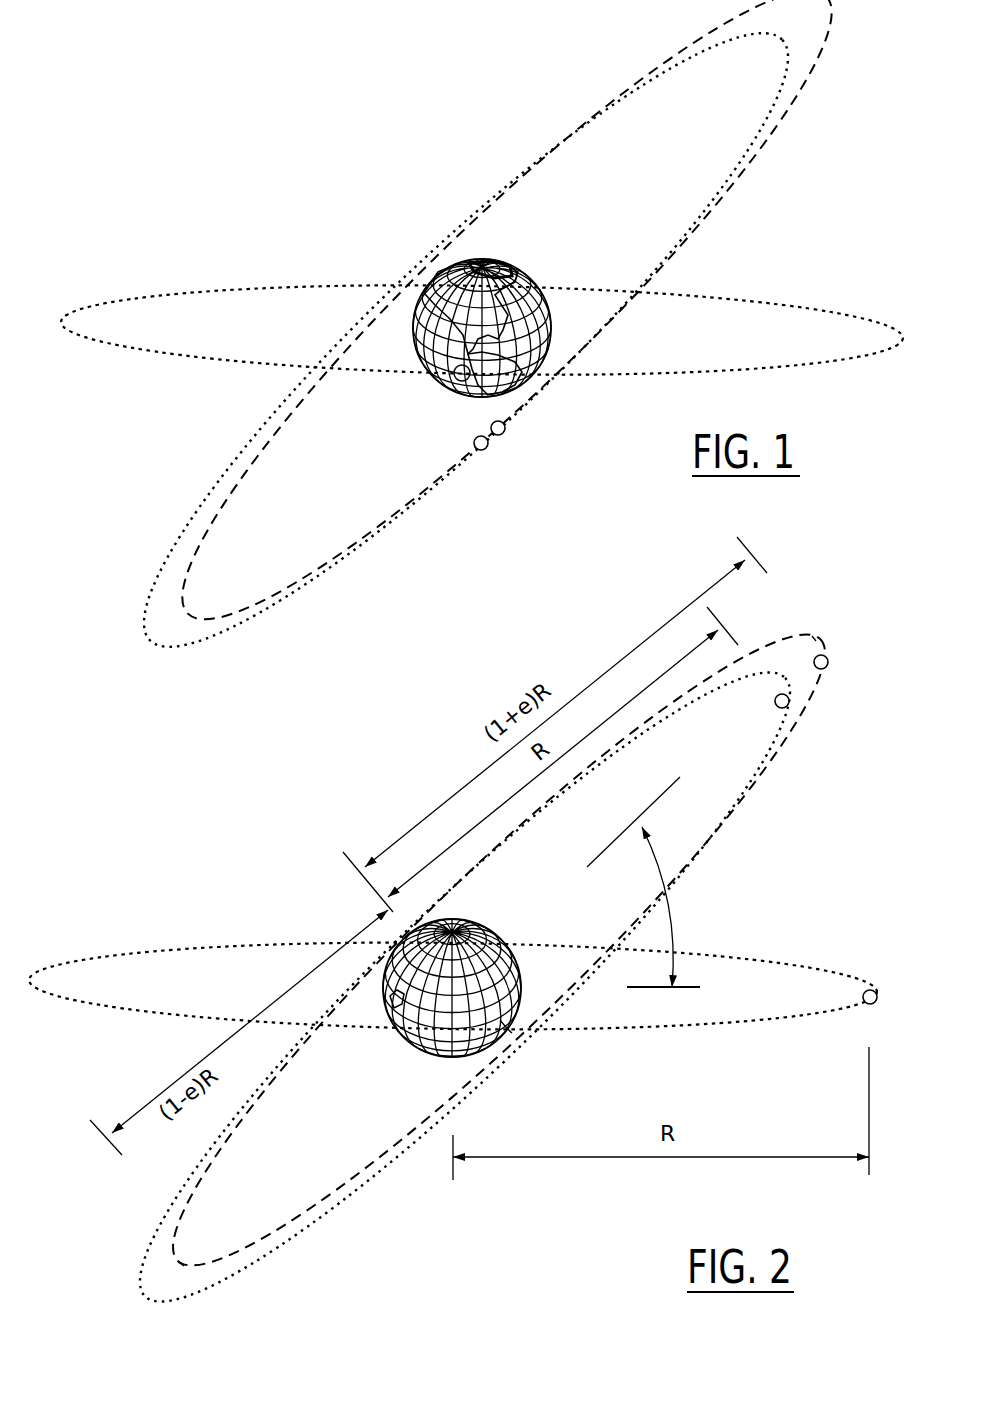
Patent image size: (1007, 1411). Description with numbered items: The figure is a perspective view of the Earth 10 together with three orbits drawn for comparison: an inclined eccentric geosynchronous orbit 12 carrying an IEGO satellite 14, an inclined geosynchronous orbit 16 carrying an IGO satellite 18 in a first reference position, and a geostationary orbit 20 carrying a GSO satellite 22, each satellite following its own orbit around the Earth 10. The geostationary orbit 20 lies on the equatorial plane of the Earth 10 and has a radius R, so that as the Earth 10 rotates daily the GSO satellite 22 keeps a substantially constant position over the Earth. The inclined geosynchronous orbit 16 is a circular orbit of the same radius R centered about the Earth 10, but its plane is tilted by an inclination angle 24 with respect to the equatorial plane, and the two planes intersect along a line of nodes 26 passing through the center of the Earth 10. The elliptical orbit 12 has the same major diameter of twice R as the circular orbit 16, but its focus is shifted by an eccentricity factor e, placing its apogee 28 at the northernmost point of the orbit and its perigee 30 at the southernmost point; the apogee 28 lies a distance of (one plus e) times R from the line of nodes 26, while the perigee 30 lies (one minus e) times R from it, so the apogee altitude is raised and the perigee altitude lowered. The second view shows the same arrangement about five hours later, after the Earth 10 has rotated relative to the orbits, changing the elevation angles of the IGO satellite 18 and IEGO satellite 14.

In FIG. 1, the Earth 10 is at (513, 267).
In FIG. 2, the Earth 10 is at (452, 920).
In FIG. 1, the inclined eccentric geosynchronous orbit 12 is at (810, 76).
In FIG. 2, the inclined eccentric geosynchronous orbit 12 is at (754, 795).
In FIG. 1, the IEGO satellite 14 is at (506, 431).
In FIG. 2, the IEGO satellite 14 is at (829, 657).
In FIG. 1, the inclined geosynchronous orbit 16 is at (773, 119).
In FIG. 2, the inclined geosynchronous orbit 16 is at (768, 755).
In FIG. 1, the IGO satellite 18 is at (489, 450).
In FIG. 2, the IGO satellite 18 is at (790, 697).
In FIG. 1, the geostationary orbit 20 is at (203, 358).
In FIG. 2, the geostationary orbit 20 is at (757, 958).
In FIG. 1, the GSO satellite 22 is at (452, 383).
In FIG. 2, the GSO satellite 22 is at (871, 990).
In FIG. 2, the inclination angle 24 is at (673, 917).
In FIG. 2, the line of nodes 26 is at (512, 1033).
In FIG. 2, the apogee 28 is at (815, 637).
In FIG. 2, the perigee 30 is at (180, 1263).